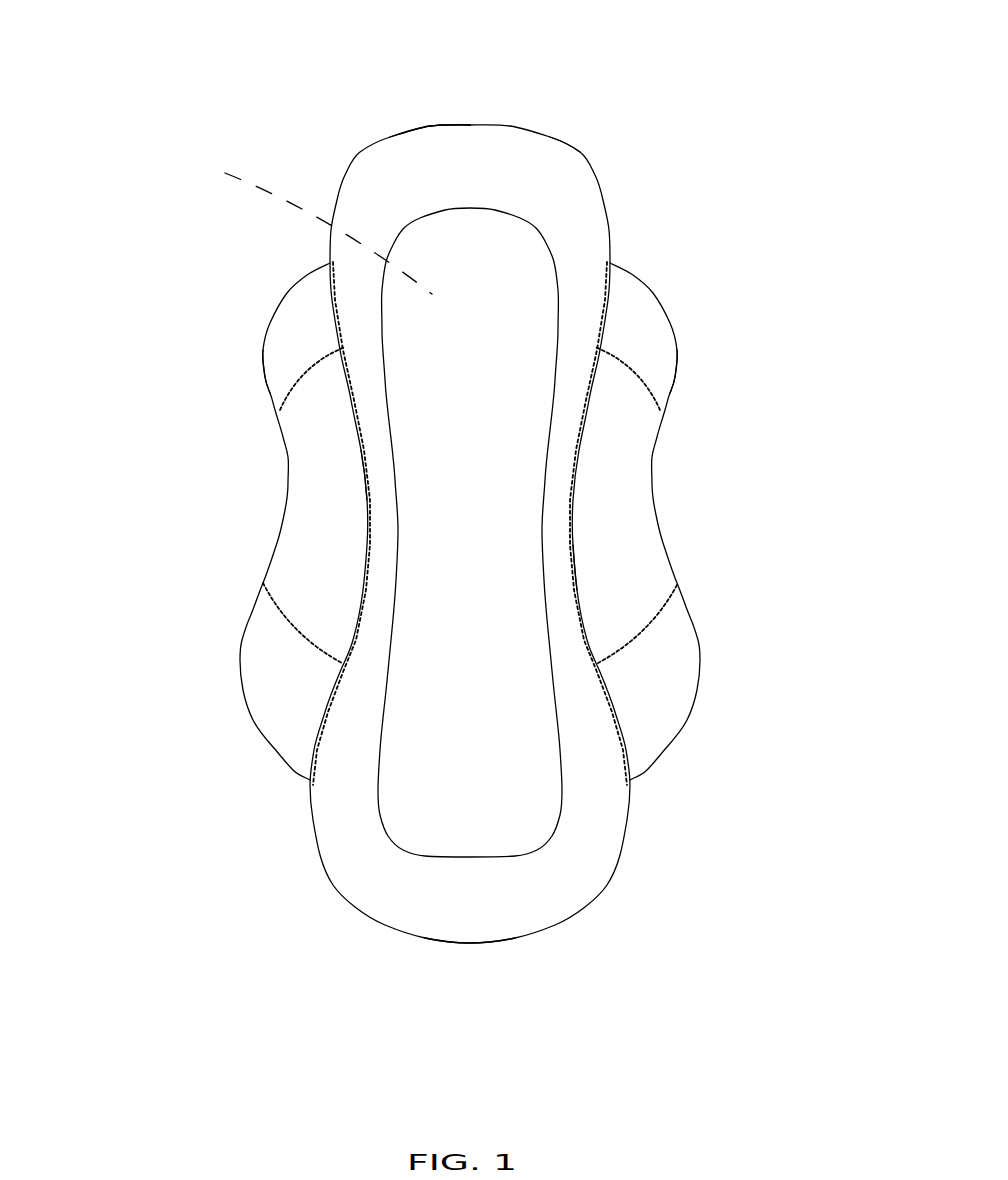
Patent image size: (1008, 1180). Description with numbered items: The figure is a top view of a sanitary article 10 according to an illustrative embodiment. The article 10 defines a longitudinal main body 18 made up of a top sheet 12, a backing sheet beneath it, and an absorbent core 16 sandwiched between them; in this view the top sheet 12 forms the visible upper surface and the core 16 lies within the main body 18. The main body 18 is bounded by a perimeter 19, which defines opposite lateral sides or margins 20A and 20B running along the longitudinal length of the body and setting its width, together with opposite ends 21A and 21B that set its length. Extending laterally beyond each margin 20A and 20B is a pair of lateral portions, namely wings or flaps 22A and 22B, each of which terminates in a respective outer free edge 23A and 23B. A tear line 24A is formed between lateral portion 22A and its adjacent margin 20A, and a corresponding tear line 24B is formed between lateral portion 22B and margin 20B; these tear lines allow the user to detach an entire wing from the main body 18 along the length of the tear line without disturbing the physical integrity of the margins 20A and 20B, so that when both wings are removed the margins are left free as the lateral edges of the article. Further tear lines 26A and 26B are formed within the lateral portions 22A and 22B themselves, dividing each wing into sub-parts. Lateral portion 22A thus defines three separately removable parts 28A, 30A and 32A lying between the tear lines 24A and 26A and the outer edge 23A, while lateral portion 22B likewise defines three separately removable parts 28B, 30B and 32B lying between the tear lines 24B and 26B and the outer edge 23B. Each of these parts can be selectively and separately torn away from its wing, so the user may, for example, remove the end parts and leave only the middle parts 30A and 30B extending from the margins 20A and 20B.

The sanitary article 10 is at (617, 153).
The top sheet 12 is at (575, 230).
The absorbent core 16 is at (203, 171).
The main body 18 is at (462, 113).
The perimeter 19 is at (552, 143).
The end 21A is at (443, 127).
The end 21B is at (470, 944).
The lateral portion 22A is at (227, 360).
The lateral portion 22B is at (687, 310).
The outer free edge 23A is at (267, 385).
The outer free edge 23B is at (662, 428).
The lateral margin 20A is at (360, 447).
The lateral margin 20B is at (577, 467).
The tear line 24A is at (363, 488).
The tear line 24B is at (580, 577).
The tear line 26A is at (290, 383).
The tear line 26B is at (660, 397).
The removable part 28A is at (332, 340).
The removable part 28B is at (658, 340).
The removable part 30A is at (340, 565).
The removable part 30B is at (642, 618).
The removable part 32A is at (313, 713).
The removable part 32B is at (668, 732).